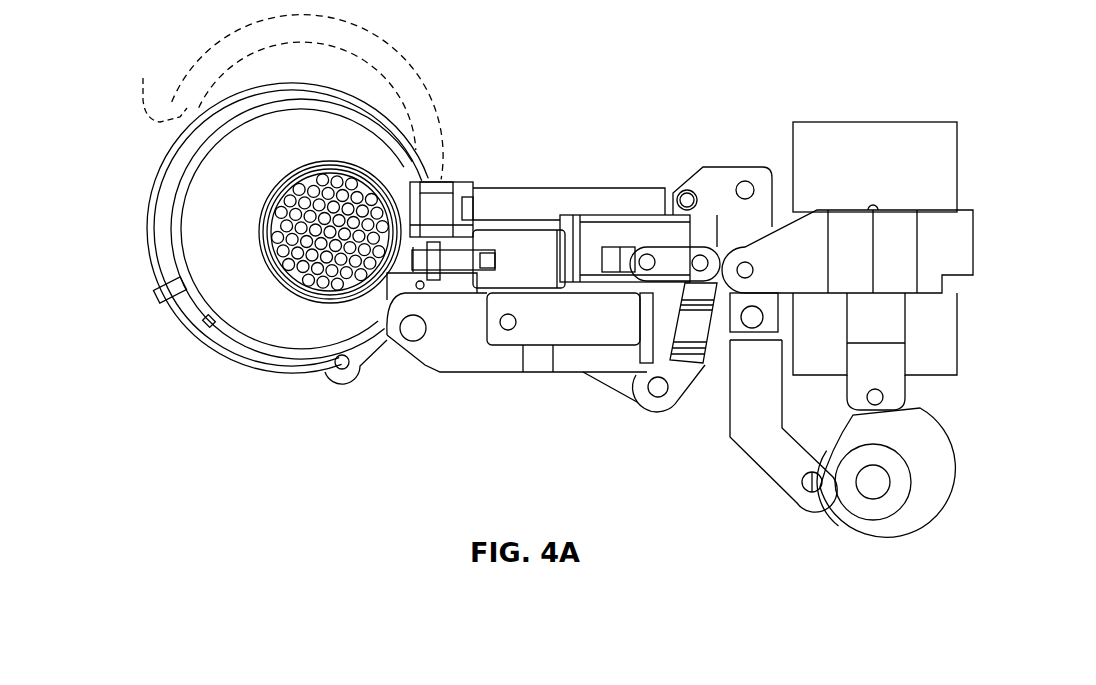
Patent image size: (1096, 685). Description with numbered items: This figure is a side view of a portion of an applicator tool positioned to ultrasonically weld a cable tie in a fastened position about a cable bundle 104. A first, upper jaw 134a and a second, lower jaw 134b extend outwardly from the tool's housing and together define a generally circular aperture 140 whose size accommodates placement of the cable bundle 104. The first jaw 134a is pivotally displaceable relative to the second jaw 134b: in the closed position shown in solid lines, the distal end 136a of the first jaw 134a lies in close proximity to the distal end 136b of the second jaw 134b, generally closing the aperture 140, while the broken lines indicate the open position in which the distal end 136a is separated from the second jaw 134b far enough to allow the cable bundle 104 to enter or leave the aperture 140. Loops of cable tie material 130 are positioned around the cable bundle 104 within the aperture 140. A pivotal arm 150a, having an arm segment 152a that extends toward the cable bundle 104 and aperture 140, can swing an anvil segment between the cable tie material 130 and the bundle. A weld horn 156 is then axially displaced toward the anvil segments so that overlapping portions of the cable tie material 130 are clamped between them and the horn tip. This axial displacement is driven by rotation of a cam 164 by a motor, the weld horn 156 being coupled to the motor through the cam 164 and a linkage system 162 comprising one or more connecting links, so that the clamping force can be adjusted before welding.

The cable bundle 104 is at (337, 224).
The cable tie material 130 is at (302, 297).
The first jaw 134a is at (399, 48).
The second jaw 134b is at (212, 352).
The distal end of the first jaw 136a is at (151, 86).
The distal end of the second jaw 136b is at (172, 300).
The aperture 140 is at (222, 204).
The pivotal arm 150a is at (463, 262).
The arm segment 152a is at (441, 209).
The weld horn 156 is at (535, 228).
The linkage system 162 is at (657, 430).
The cam 164 is at (930, 488).